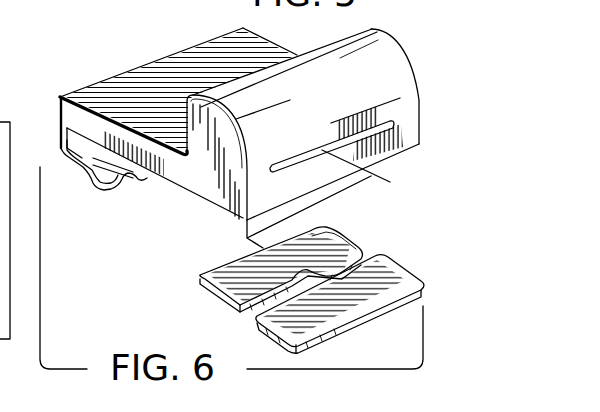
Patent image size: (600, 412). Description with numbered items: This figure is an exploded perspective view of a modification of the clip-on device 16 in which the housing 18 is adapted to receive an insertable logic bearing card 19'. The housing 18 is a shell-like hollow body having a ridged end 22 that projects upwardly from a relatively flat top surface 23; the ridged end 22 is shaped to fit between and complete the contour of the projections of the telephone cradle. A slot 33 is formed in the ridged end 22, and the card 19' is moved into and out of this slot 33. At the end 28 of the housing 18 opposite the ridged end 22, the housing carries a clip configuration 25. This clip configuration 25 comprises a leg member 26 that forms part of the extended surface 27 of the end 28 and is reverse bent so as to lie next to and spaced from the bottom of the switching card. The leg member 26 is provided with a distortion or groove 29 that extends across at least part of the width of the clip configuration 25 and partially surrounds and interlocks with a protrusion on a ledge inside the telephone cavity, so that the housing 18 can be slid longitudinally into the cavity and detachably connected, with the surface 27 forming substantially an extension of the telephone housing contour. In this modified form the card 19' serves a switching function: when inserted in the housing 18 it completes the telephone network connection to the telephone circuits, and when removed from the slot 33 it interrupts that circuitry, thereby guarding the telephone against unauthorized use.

The housing 18 is at (405, 38).
The clip-on device 16 is at (169, 90).
The ridged end 22 is at (318, 103).
The flat top surface 23 is at (180, 63).
The leg member 26 is at (123, 184).
The extended surface 27 is at (58, 123).
The end of housing 28 is at (74, 91).
The groove 29 is at (89, 181).
The slot 33 is at (310, 151).
The clip configuration 25 is at (89, 191).
The logic bearing card 19' is at (300, 290).